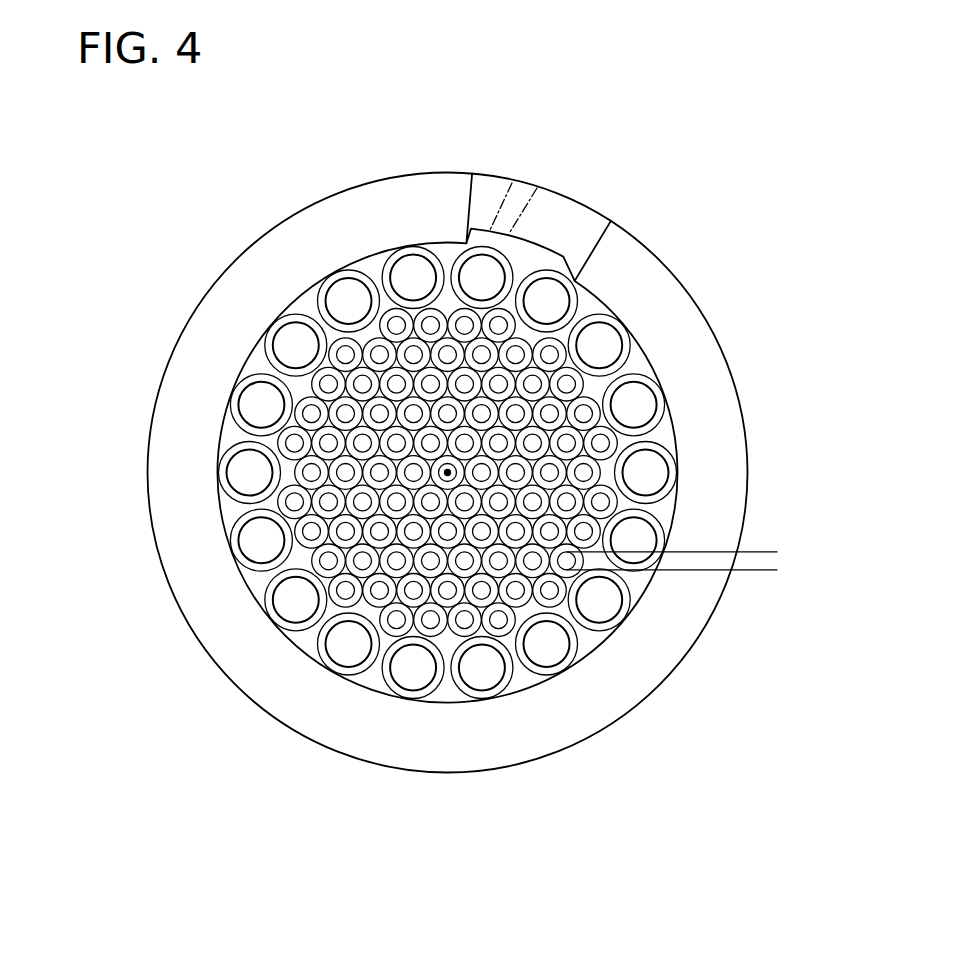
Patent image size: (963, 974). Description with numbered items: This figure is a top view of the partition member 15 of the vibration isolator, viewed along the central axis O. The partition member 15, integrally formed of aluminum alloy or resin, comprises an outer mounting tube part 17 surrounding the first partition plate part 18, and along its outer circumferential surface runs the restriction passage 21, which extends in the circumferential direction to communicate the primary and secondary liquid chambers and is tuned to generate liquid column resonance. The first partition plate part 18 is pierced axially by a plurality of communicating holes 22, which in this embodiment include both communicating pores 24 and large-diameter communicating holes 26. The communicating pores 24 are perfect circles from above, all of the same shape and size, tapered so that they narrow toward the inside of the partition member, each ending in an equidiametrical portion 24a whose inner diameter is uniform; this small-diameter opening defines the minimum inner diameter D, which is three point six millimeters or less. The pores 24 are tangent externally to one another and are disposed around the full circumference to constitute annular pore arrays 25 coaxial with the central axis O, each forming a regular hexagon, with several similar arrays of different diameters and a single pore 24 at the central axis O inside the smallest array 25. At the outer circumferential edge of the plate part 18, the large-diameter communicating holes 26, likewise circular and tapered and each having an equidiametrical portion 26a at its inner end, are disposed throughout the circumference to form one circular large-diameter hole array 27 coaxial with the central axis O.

The partition member 15 is at (706, 138).
The mounting tube part 17 is at (170, 482).
The first partition plate part 18 is at (250, 363).
The restriction passage 21 is at (557, 212).
The communicating holes 22 is at (531, 589).
The communicating pores 24 is at (451, 473).
The equidiametrical portion 24a is at (563, 565).
The pore array 25 is at (576, 620).
The large-diameter communicating holes 26 is at (244, 568).
The equidiametrical portion 26a is at (645, 496).
The large-diameter hole array 27 is at (426, 571).
The central axis O is at (448, 472).
The minimum inner diameter D is at (776, 525).